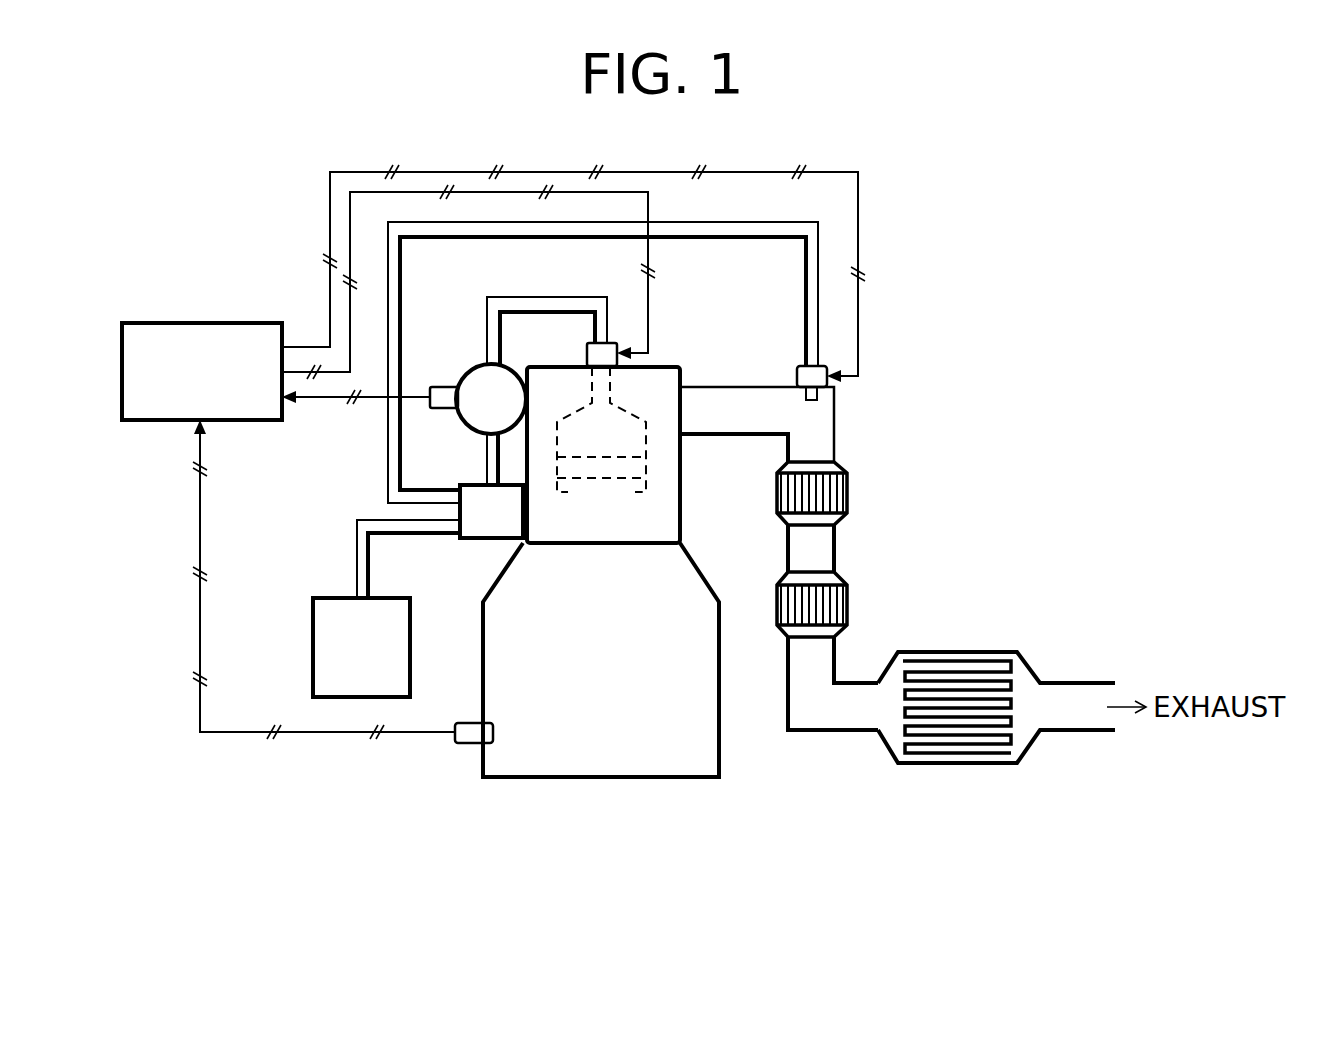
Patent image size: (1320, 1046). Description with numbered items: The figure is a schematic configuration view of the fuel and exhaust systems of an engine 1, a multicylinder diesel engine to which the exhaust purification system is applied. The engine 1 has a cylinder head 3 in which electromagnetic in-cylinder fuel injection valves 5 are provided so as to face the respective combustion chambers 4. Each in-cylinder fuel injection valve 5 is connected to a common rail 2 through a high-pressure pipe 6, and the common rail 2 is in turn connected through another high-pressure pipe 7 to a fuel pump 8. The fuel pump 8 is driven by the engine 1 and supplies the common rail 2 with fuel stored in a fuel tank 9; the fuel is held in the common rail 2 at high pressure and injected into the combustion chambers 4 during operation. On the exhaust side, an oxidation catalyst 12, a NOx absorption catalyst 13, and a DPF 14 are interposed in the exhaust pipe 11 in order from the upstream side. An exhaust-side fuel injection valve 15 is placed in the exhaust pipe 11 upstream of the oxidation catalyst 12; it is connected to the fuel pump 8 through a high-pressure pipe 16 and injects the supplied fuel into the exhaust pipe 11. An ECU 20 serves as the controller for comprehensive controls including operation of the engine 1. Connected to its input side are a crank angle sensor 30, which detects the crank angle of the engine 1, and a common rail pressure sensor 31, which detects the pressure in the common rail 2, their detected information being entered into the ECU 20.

The engine 1 is at (605, 790).
The common rail 2 is at (476, 368).
The cylinder head 3 is at (667, 367).
The combustion chamber 4 is at (625, 442).
The in-cylinder fuel injection valve 5 is at (612, 343).
The high-pressure pipe 6 is at (545, 298).
The high-pressure pipe 7 is at (487, 455).
The fuel pump 8 is at (468, 542).
The fuel tank 9 is at (311, 614).
The exhaust pipe 11 is at (724, 400).
The oxidation catalyst 12 is at (848, 480).
The NOx absorption catalyst 13 is at (848, 592).
The DPF 14 is at (985, 651).
The exhaust-side fuel injection valve 15 is at (803, 367).
The high-pressure pipe 16 is at (737, 240).
The ECU 20 is at (150, 323).
The crank angle sensor 30 is at (466, 748).
The common rail pressure sensor 31 is at (438, 387).